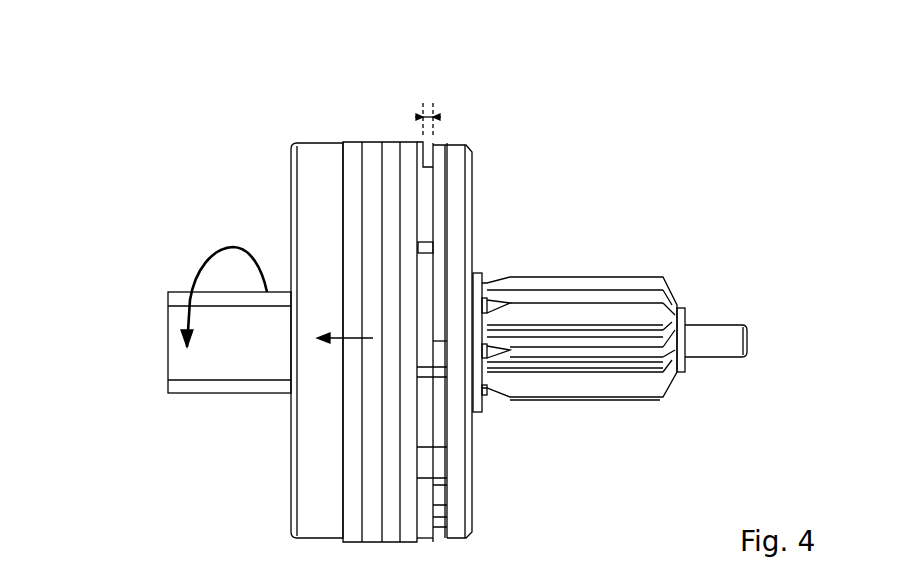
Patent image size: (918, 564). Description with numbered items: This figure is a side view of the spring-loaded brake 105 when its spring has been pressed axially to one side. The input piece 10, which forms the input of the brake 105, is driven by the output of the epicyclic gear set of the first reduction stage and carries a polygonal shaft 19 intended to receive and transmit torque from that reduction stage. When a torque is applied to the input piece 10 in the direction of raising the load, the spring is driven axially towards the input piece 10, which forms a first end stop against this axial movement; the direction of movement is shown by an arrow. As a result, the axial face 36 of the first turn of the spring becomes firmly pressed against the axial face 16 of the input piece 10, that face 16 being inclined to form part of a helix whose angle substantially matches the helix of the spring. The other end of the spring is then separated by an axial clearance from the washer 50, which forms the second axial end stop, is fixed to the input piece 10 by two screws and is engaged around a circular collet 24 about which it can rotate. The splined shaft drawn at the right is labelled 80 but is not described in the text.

The spring-loaded brake 105 is at (125, 100).
The input piece 10 is at (313, 197).
The polygonal shaft 19 is at (175, 365).
The axial face of the first turn of the spring 36 is at (340, 182).
The axial face of the input piece 16 is at (350, 167).
The washer 50 is at (456, 192).
The circular collet 24 is at (480, 273).
The splined shaft 80 is at (622, 385).